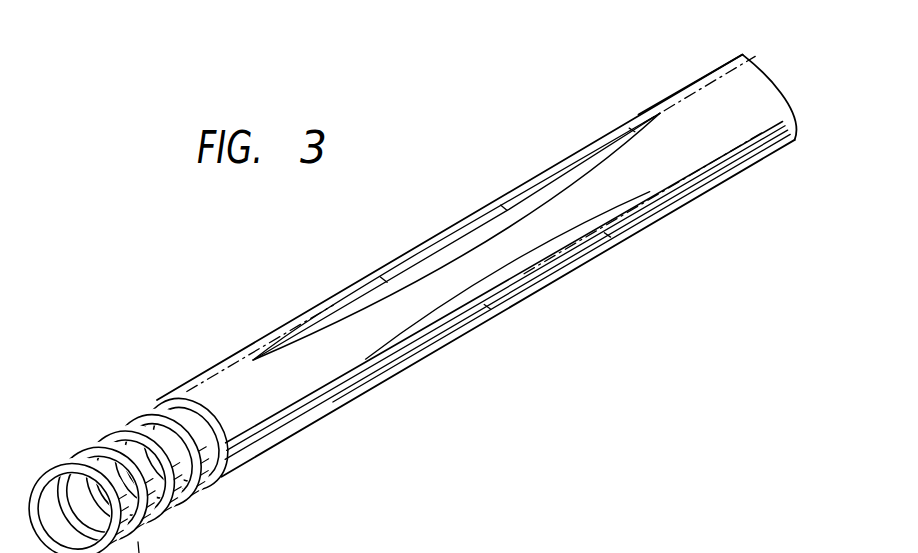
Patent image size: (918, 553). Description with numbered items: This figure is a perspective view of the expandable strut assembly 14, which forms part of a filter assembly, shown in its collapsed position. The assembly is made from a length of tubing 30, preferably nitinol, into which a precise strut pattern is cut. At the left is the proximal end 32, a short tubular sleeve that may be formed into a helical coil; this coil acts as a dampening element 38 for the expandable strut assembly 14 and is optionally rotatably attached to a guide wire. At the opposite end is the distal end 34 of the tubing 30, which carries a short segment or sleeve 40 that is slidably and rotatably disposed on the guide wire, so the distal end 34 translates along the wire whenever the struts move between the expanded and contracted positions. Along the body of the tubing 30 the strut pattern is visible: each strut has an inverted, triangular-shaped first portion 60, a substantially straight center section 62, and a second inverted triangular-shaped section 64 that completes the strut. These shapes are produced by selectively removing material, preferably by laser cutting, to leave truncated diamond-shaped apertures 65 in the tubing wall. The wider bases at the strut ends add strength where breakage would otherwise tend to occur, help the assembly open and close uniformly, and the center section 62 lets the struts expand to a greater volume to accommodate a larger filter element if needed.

The expandable strut assembly 14 is at (557, 303).
The tubing 30 is at (313, 304).
The proximal end 32 is at (100, 412).
The distal end 34 is at (707, 96).
The dampening element 38 is at (185, 496).
The sleeve 40 is at (732, 157).
The first portion 60 is at (335, 362).
The center section 62 is at (478, 273).
The second inverted triangular shaped section 64 is at (565, 205).
The truncated diamond shape apertures 65 is at (450, 235).